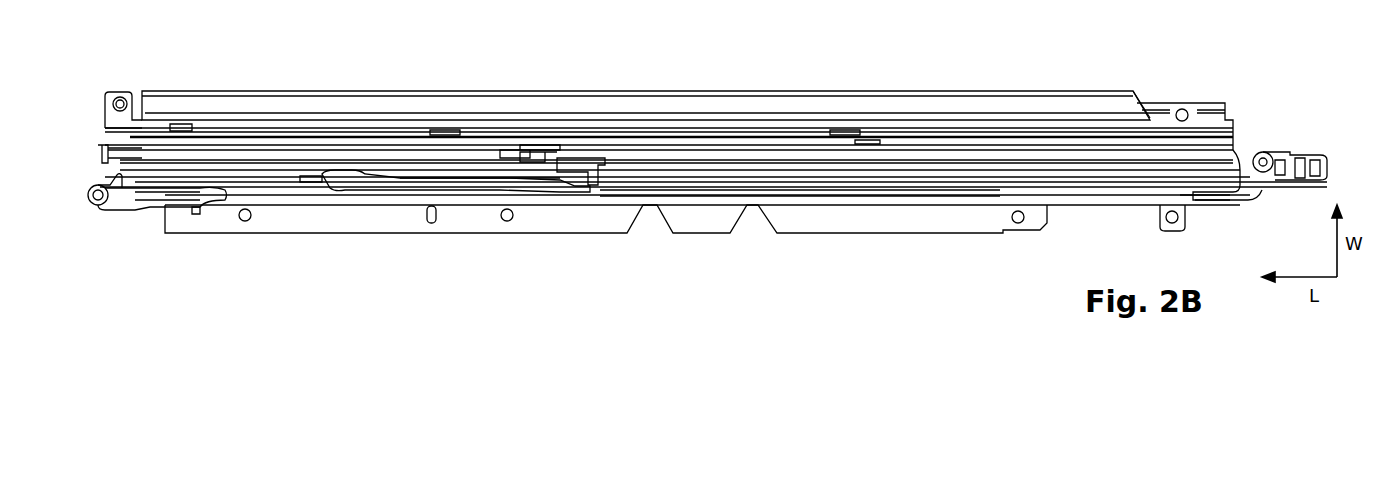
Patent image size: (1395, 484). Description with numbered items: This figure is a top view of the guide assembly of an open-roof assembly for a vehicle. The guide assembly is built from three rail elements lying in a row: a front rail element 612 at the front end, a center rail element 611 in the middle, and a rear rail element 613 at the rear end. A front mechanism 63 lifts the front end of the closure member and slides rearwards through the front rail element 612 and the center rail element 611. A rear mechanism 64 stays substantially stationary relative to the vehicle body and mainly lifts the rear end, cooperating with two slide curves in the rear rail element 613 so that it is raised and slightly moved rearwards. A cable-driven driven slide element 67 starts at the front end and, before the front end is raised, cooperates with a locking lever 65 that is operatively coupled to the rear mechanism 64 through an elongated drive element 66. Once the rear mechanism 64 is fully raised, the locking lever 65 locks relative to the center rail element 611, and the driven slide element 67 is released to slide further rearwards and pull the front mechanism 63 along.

The front mechanism 63 is at (180, 110).
The rear mechanism 64 is at (1187, 170).
The locking lever 65 is at (410, 180).
The elongated drive element 66 is at (705, 192).
The driven slide element 67 is at (570, 162).
The center rail element 611 is at (590, 215).
The front rail element 612 is at (133, 200).
The rear rail element 613 is at (1235, 203).